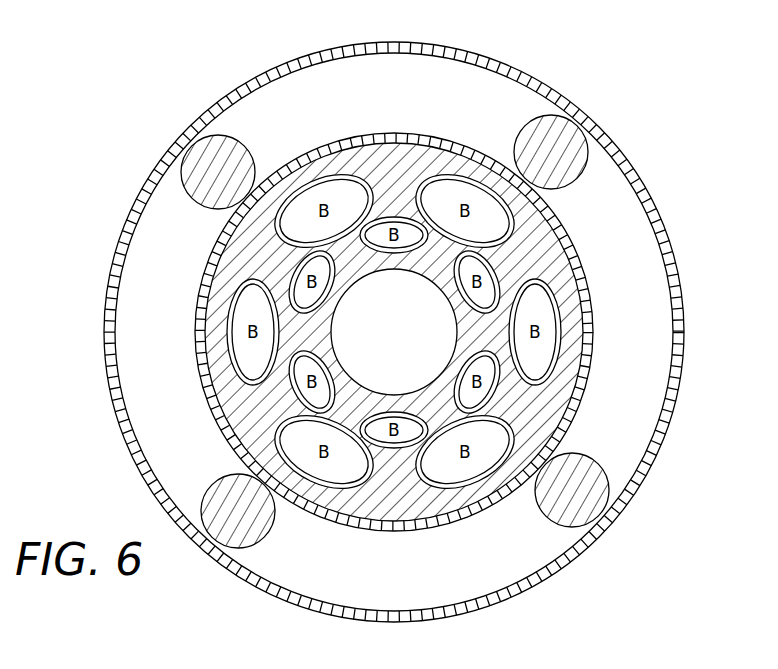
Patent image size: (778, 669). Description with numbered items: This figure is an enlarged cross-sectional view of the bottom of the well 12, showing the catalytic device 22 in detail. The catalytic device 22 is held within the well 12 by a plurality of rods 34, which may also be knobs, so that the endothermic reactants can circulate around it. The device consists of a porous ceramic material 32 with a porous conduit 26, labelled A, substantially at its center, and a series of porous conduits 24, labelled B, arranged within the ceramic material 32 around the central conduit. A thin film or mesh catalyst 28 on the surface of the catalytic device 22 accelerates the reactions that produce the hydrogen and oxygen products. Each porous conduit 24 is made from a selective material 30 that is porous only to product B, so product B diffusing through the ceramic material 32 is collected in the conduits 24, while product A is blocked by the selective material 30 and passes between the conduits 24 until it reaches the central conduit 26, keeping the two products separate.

The well 12 is at (543, 82).
The catalytic device 22 is at (417, 122).
The porous conduits 24 is at (492, 222).
The porous conduit 26 is at (487, 305).
The thin film or mesh catalyst 28 is at (577, 408).
The selective material 30 is at (428, 327).
The porous ceramic material 32 is at (563, 383).
The rods 34 is at (593, 487).